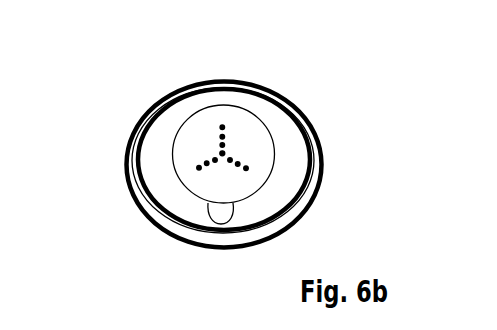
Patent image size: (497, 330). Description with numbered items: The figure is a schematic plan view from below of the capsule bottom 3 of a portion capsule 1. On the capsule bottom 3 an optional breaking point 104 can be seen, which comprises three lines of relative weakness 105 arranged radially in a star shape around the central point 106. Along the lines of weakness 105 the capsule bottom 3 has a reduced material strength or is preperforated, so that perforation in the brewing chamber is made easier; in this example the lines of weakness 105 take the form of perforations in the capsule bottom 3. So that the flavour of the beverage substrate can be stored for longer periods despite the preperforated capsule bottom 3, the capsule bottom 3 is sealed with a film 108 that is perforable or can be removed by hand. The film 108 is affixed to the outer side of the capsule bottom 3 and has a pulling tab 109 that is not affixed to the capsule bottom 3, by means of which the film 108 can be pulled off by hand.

The portion capsule 1 is at (162, 92).
The capsule bottom 3 is at (283, 93).
The breaking point 104 is at (208, 147).
The lines of relative weakness 105 is at (234, 157).
The central point 106 is at (223, 157).
The film 108 is at (187, 117).
The pulling tab 109 is at (241, 209).